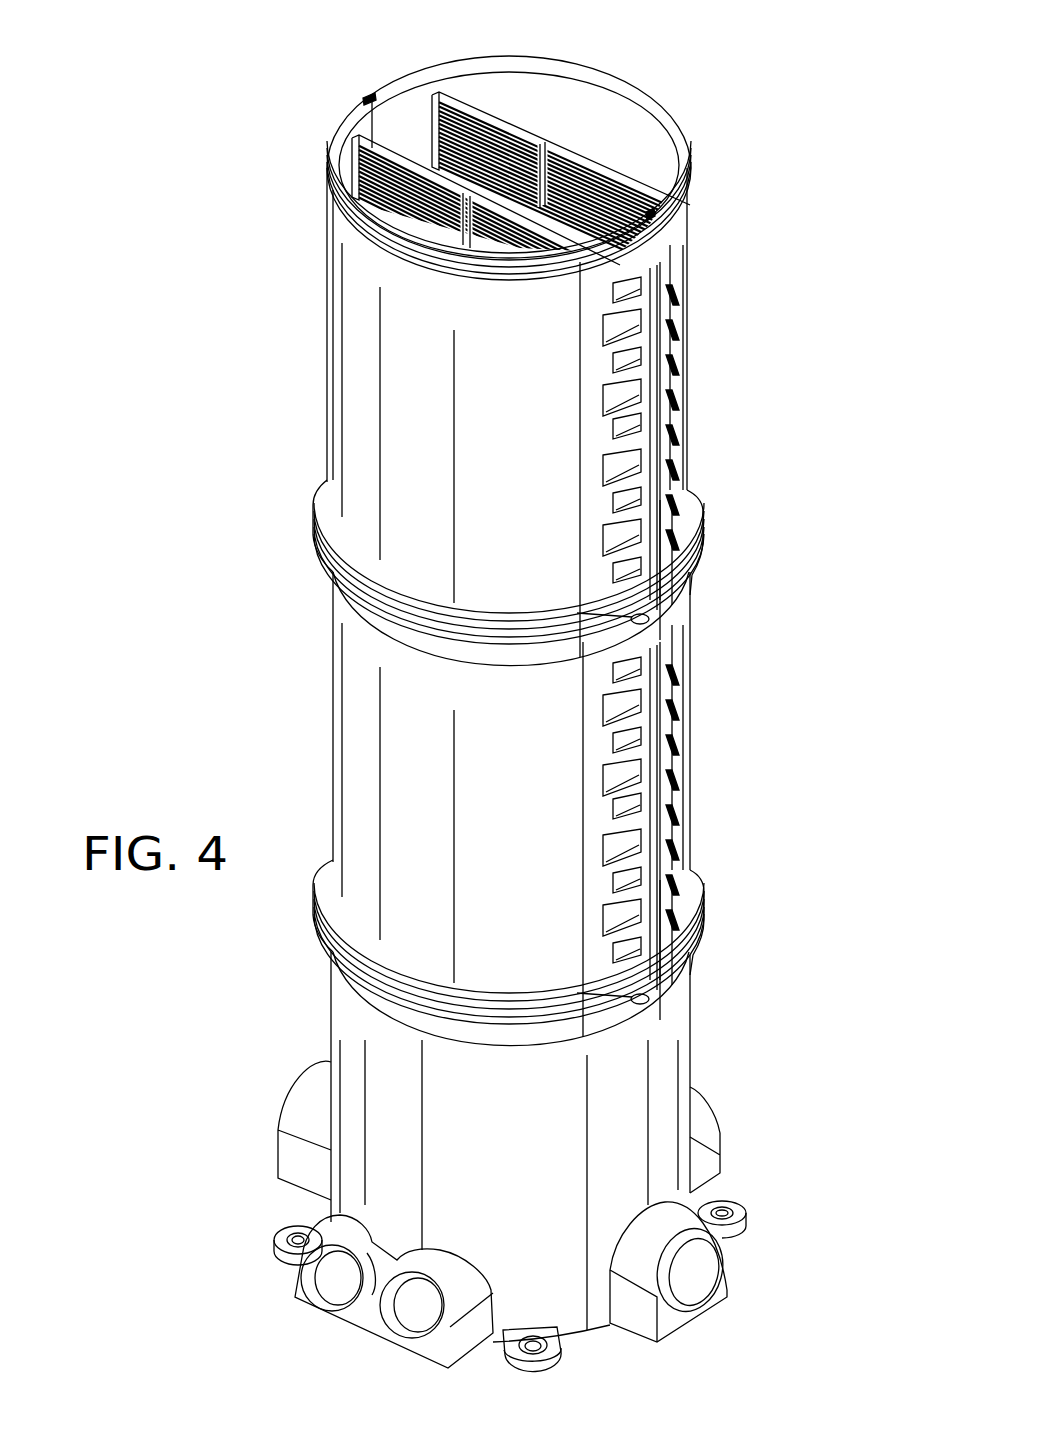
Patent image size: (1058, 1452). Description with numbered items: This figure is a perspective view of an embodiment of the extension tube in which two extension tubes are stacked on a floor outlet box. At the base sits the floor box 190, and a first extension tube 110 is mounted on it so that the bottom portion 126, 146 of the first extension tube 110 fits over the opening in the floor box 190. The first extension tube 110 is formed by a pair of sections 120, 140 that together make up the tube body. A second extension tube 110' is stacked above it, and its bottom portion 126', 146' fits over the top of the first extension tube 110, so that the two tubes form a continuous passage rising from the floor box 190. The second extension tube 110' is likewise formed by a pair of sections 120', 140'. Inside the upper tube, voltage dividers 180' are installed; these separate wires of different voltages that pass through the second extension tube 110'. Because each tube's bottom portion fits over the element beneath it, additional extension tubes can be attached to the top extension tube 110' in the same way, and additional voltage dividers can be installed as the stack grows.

The voltage divider 180' is at (557, 170).
The second extension tube 110' is at (583, 273).
The section 120' is at (430, 423).
The section 140' is at (724, 437).
The bottom portion 126' is at (443, 546).
The bottom portion 146' is at (752, 568).
The first extension tube 110 is at (602, 721).
The section 120 is at (426, 830).
The section 140 is at (729, 817).
The bottom portion 126 is at (460, 953).
The bottom portion 146 is at (733, 927).
The floor box 190 is at (296, 1076).